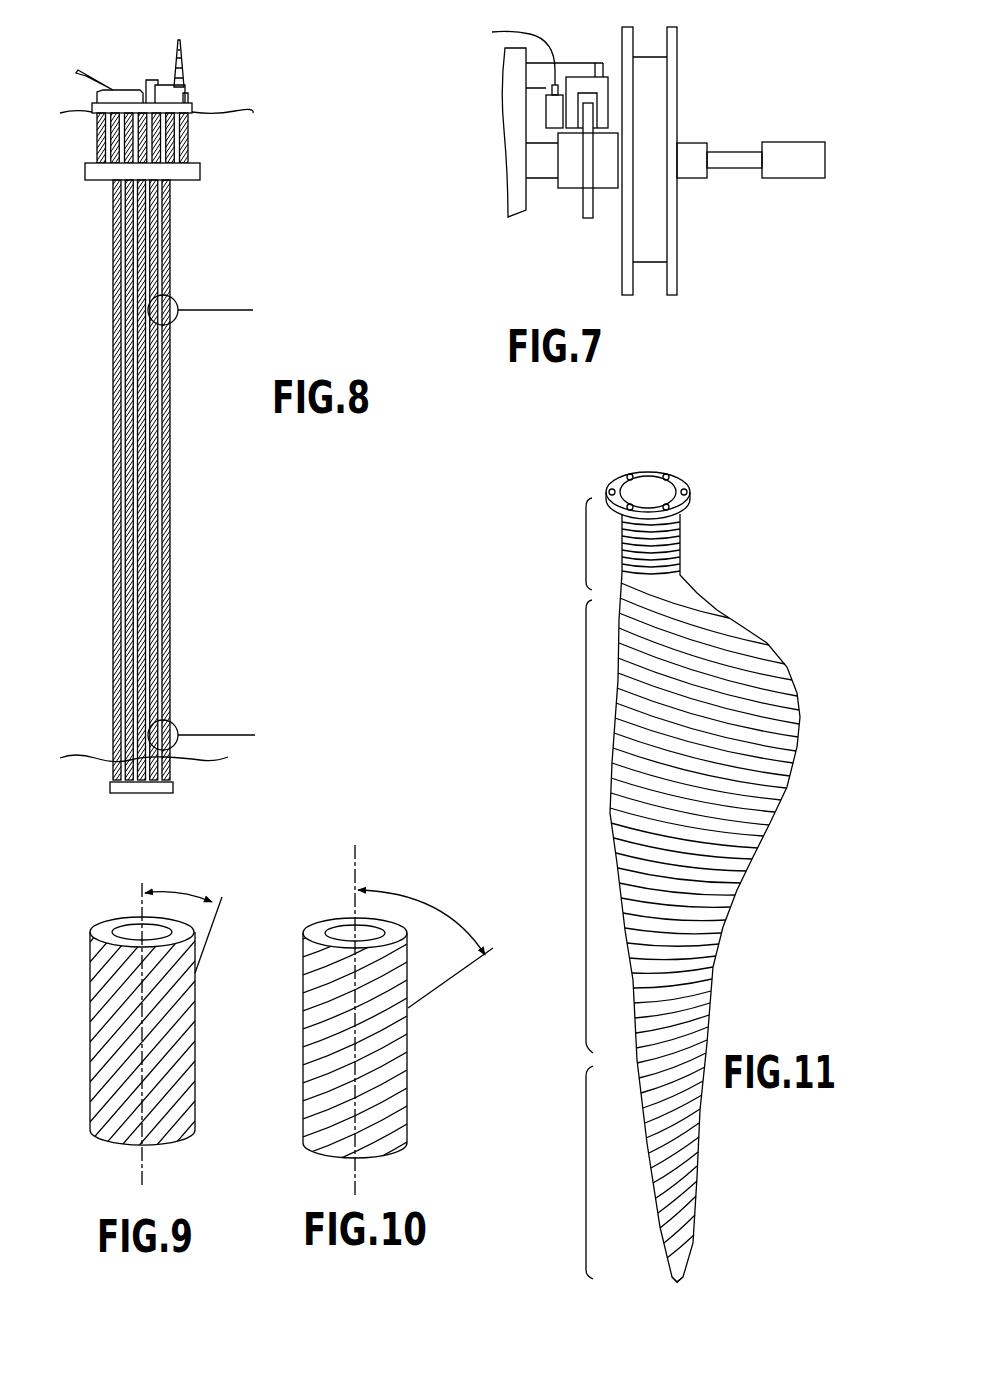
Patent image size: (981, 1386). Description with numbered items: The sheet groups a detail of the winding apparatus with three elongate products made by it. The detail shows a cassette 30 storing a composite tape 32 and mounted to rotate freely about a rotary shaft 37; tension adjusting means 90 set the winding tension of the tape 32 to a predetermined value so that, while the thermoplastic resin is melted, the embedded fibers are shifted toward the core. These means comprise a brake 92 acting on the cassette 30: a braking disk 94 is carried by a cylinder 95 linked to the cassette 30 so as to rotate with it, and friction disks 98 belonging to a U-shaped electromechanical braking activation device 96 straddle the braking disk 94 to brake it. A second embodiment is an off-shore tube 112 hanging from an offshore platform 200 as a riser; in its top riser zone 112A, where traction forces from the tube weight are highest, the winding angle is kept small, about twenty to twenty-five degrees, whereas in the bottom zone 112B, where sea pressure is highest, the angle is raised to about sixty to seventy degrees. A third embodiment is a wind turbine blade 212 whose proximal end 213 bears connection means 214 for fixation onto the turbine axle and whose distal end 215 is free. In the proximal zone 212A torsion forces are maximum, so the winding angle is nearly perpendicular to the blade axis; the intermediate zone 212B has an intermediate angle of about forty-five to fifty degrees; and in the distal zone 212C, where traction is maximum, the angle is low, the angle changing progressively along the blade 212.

In FIG. 7, the cassette 30 is at (683, 72).
In FIG. 7, the tape 32 is at (653, 115).
In FIG. 7, the rotary shaft 37 is at (727, 163).
In FIG. 7, the tension adjusting means 90 is at (573, 225).
In FIG. 7, the brake 92 is at (575, 153).
In FIG. 7, the braking disk 94 is at (585, 172).
In FIG. 7, the cylinder 95 is at (607, 170).
In FIG. 7, the electromechanical braking activation device 96 is at (573, 77).
In FIG. 7, the friction disks 98 is at (583, 97).
In FIG. 8, the offshore platform 200 is at (193, 92).
In FIG. 8, the off-shore tube 112 is at (177, 517).
In FIG. 8, the riser zone 112A is at (173, 284).
In FIG. 9, the riser zone 112A is at (203, 1007).
In FIG. 8, the riser bottom zone 112B is at (175, 712).
In FIG. 10, the riser bottom zone 112B is at (418, 1088).
In FIG. 11, the wind turbine blade 212 is at (782, 639).
In FIG. 11, the proximal zone 212A is at (615, 549).
In FIG. 11, the intermediate zone 212B is at (608, 770).
In FIG. 11, the distal zone 212C is at (645, 1143).
In FIG. 11, the proximal end 213 is at (690, 476).
In FIG. 11, the connection means 214 is at (627, 472).
In FIG. 11, the distal end 215 is at (715, 1254).